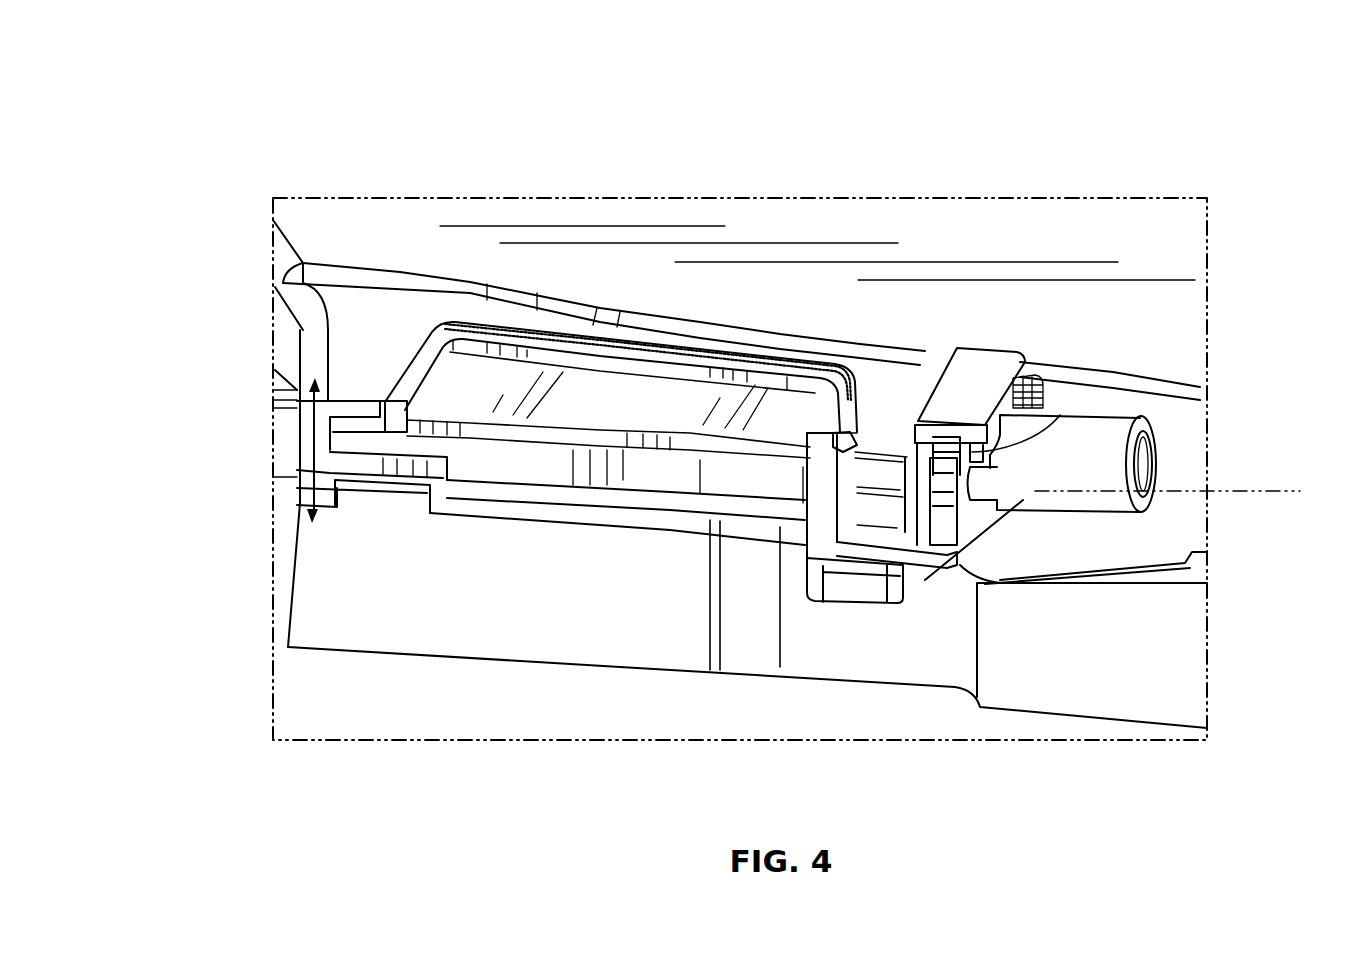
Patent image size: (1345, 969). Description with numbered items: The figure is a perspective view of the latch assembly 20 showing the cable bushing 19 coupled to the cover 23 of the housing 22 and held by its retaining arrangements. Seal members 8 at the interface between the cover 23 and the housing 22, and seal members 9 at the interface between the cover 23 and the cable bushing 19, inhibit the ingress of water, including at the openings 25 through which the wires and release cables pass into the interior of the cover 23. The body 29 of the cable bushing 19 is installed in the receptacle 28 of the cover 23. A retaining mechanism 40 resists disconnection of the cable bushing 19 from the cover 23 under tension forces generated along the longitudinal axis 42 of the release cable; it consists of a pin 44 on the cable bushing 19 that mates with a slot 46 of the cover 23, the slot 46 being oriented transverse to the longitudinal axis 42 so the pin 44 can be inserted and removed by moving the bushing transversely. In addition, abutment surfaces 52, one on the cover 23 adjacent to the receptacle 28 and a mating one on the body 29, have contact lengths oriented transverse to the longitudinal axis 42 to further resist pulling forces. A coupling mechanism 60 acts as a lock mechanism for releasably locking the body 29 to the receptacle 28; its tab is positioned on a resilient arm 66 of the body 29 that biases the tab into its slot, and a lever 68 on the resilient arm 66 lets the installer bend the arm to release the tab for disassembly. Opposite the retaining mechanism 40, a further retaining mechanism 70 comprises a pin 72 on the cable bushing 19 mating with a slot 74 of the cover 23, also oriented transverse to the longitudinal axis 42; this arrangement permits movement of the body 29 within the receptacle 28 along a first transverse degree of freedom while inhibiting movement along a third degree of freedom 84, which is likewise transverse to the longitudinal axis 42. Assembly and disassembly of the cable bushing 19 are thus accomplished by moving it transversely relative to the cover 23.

The seal members 8 is at (603, 527).
The seal members 9 is at (775, 355).
The cable bushing 19 is at (583, 390).
The latch assembly 20 is at (682, 122).
The housing 22 is at (1167, 700).
The cover 23 is at (470, 215).
The openings 25 is at (1147, 463).
The receptacle 28 is at (840, 332).
The body 29 is at (640, 414).
The retaining mechanism 40 is at (963, 395).
The longitudinal axis 42 is at (1215, 495).
The pin 44 is at (937, 512).
The slot 46 is at (975, 450).
The abutment surfaces 52 is at (868, 445).
The coupling mechanism 60 is at (887, 415).
The resilient arm 66 is at (867, 530).
The lever 68 is at (937, 552).
The retaining mechanism 70 is at (352, 305).
The pin 72 is at (370, 443).
The slot 74 is at (360, 405).
The third degree of freedom 84 is at (300, 438).